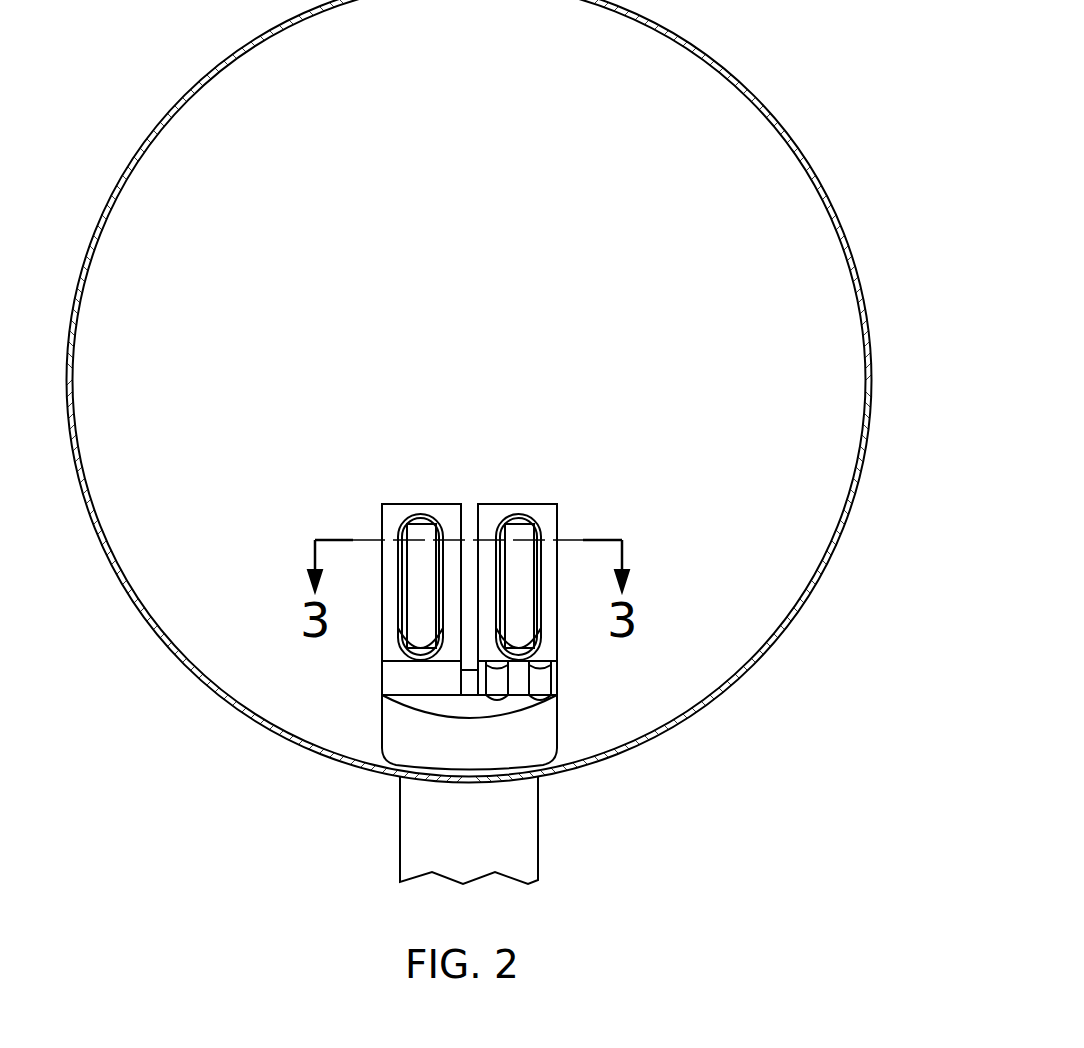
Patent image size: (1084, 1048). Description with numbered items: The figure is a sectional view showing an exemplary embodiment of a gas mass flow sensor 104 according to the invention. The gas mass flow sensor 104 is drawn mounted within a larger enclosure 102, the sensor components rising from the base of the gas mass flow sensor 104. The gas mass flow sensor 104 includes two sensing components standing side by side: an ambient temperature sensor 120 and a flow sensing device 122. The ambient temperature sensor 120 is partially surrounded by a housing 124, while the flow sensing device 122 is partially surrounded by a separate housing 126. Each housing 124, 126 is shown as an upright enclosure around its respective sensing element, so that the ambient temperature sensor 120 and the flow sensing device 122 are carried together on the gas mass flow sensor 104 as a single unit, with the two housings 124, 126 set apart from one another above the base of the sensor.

The bulb envelope 102 is at (717, 57).
The gas mass flow sensor 104 is at (553, 723).
The ambient temperature sensor 120 is at (423, 528).
The flow sensing device 122 is at (518, 528).
The housing 124 is at (390, 510).
The housing 126 is at (547, 510).